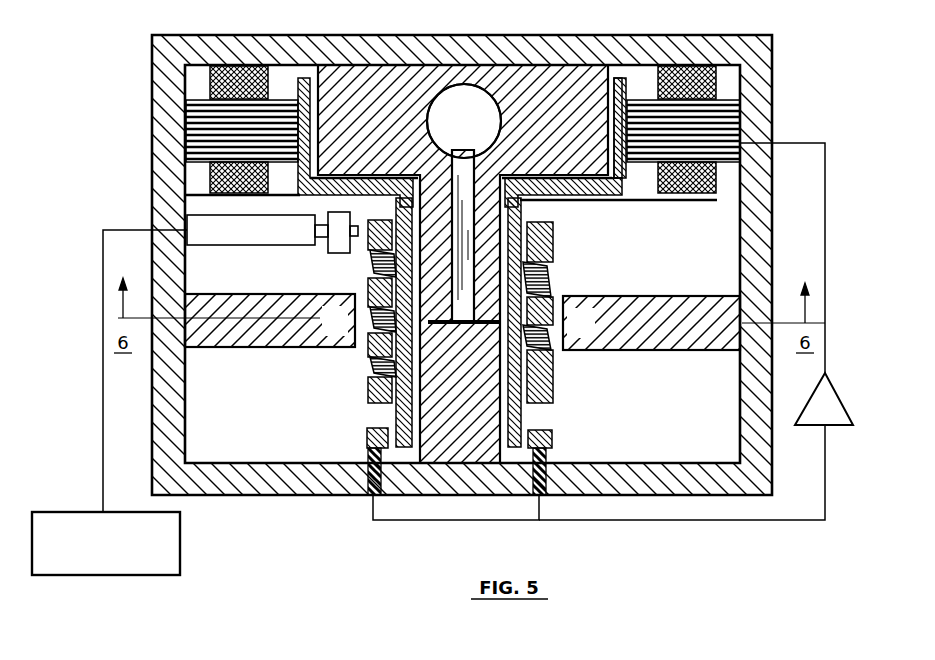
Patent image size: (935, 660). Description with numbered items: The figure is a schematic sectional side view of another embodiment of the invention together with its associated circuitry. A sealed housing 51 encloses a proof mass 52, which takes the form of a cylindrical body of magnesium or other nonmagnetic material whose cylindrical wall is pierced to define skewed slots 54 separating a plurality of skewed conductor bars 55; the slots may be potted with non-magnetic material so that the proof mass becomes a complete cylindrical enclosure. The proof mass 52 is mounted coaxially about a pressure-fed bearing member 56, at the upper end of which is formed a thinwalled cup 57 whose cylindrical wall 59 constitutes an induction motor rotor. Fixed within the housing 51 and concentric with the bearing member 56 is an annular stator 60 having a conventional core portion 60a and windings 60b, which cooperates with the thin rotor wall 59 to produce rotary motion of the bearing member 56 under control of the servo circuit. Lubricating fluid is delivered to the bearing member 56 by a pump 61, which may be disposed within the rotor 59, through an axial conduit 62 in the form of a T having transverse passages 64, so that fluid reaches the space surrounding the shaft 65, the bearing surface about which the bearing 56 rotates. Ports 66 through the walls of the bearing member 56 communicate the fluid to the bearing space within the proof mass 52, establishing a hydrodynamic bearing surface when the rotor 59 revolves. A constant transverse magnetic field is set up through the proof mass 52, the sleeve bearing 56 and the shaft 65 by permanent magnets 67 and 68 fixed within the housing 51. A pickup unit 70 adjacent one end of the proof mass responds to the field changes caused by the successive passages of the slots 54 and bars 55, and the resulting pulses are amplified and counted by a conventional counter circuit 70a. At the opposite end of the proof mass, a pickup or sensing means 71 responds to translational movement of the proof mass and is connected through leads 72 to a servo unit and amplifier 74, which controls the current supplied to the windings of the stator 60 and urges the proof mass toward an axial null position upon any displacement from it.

The sealed housing 51 is at (762, 92).
The proof mass 52 is at (369, 387).
The skewed slots 54 is at (549, 279).
The skewed conductor bars 55 is at (553, 300).
The pressure-fed bearing member 56 is at (520, 428).
The thinwalled cup 57 is at (471, 157).
The cylindrical wall 59 is at (617, 158).
The annular stator 60 is at (645, 123).
The core portion 60a is at (258, 130).
The windings 60b is at (678, 196).
The pump 61 is at (501, 103).
The axial conduit 62 is at (453, 180).
The transverse passages 64 is at (457, 327).
The shaft 65 is at (463, 307).
The ports 66 is at (521, 212).
The permanent magnet 67 is at (246, 330).
The permanent magnet 68 is at (628, 322).
The pickup unit 70 is at (338, 246).
The counter circuit 70a is at (162, 553).
The pickup or sensing means 71 is at (366, 435).
The leads 72 is at (455, 517).
The servo unit and amplifier 74 is at (837, 412).